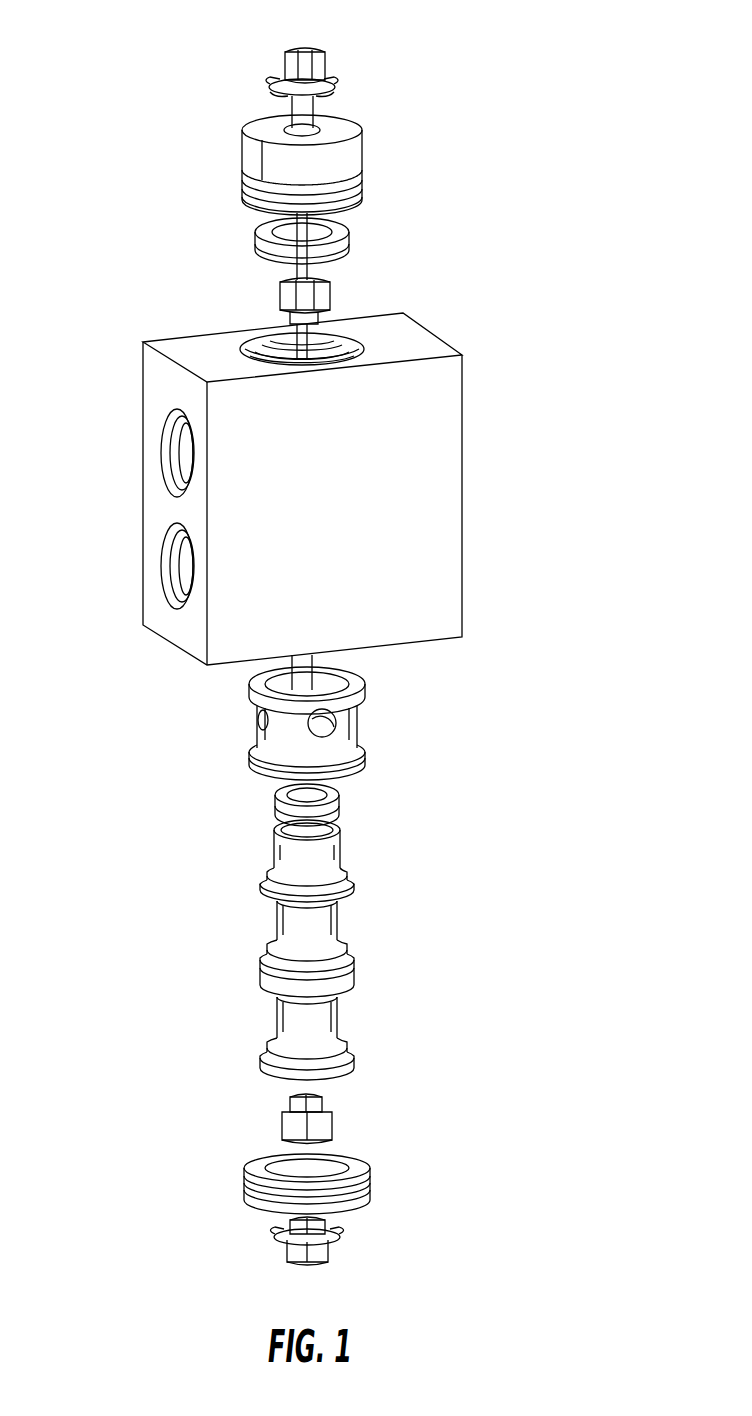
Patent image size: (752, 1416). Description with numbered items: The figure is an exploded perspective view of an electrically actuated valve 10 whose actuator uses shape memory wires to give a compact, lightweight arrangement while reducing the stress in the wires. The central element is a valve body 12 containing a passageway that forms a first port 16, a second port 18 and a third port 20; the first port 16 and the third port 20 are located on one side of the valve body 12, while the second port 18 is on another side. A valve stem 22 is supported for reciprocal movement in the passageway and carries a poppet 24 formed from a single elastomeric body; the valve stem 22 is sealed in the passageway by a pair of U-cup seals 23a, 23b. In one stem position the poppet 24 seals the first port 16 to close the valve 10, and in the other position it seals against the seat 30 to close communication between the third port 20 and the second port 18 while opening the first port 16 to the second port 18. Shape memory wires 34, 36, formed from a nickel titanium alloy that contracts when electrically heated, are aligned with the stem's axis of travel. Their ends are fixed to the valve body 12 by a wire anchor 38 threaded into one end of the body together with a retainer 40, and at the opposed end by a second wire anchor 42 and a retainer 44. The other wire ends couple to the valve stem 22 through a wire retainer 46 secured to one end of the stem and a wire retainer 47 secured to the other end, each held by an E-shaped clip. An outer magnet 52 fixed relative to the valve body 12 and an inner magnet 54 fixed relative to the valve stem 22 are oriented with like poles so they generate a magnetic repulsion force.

The valve 10 is at (508, 298).
The valve body 12 is at (437, 450).
The first port 16 is at (177, 452).
The second port 18 is at (463, 485).
The third port 20 is at (173, 565).
The valve stem 22 is at (360, 947).
The U-cup seal 23a is at (355, 880).
The U-cup seal 23b is at (350, 1040).
The poppet 24 is at (350, 955).
The seat 30 is at (357, 720).
The shape memory wire 34 is at (292, 108).
The shape memory wire 36 is at (312, 107).
The wire anchor 38 is at (365, 148).
The retainer 40 is at (325, 63).
The second wire anchor 42 is at (372, 1192).
The retainer 44 is at (330, 1254).
The wire retainer 46 is at (333, 1123).
The wire retainer 47 is at (279, 287).
The magnet 52 is at (336, 798).
The magnet 54 is at (352, 233).